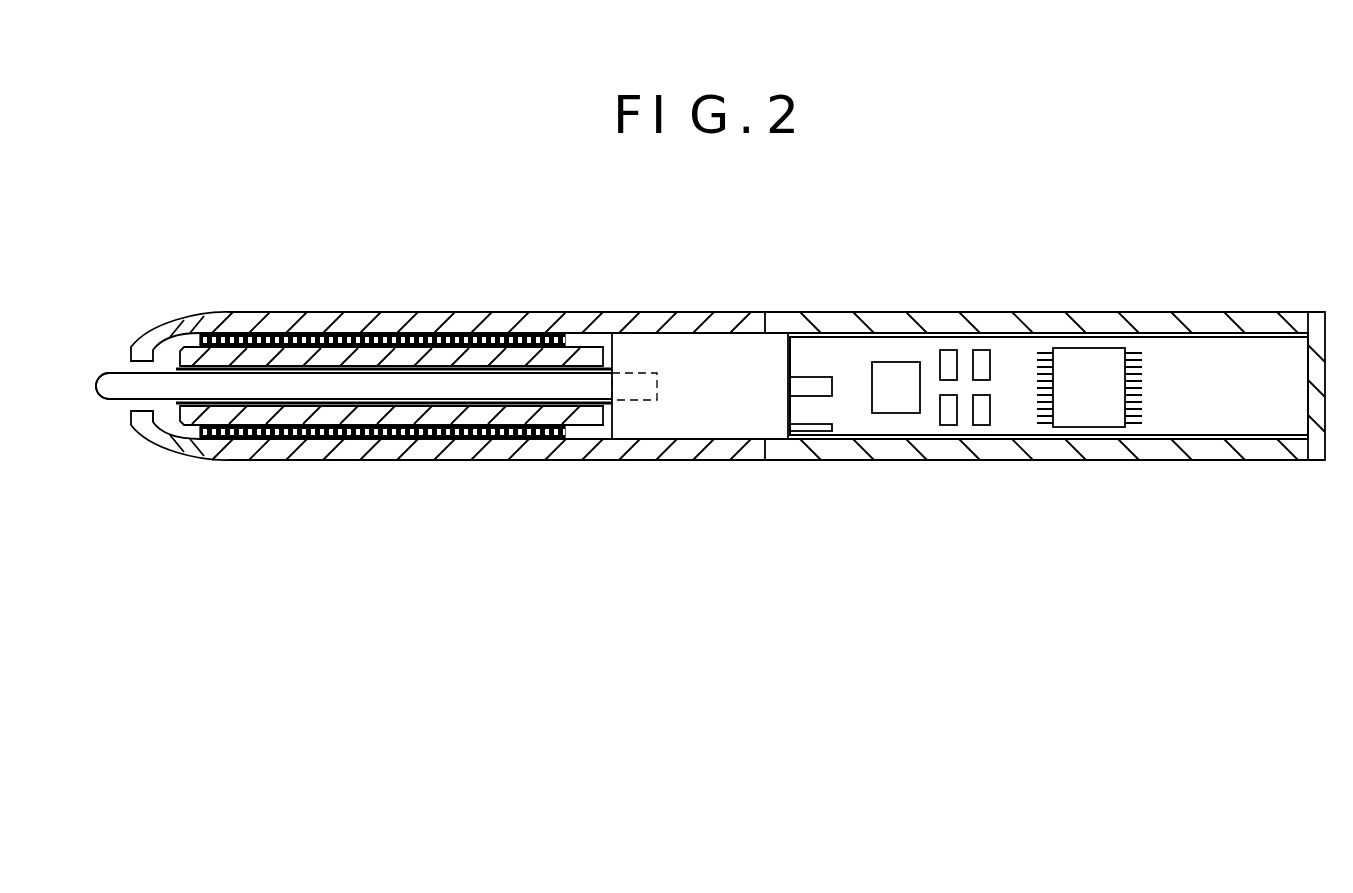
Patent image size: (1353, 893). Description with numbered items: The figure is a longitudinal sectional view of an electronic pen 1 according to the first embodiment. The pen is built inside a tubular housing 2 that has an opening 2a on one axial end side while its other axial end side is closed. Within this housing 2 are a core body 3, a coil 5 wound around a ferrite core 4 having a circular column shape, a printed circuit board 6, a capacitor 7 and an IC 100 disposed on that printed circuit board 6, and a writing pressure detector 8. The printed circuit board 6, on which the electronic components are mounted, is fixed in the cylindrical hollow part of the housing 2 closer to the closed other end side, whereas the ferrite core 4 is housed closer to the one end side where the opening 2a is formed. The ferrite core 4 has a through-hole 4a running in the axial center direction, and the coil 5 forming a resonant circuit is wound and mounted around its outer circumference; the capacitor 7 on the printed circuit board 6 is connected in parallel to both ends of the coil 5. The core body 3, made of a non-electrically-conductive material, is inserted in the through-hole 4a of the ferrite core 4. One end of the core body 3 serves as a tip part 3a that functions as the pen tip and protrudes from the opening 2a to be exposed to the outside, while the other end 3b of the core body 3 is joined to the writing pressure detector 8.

The electronic pen 1 is at (1253, 260).
The housing 2 is at (1041, 310).
The opening 2a is at (128, 407).
The core body 3 is at (295, 394).
The tip part 3a is at (102, 374).
The other end 3b is at (630, 392).
The ferrite core 4 is at (455, 353).
The through-hole 4a is at (374, 368).
The coil 5 is at (295, 343).
The printed circuit board 6 is at (1203, 350).
The capacitor 7 is at (897, 405).
The writing pressure detector 8 is at (688, 353).
The IC 100 is at (1090, 413).